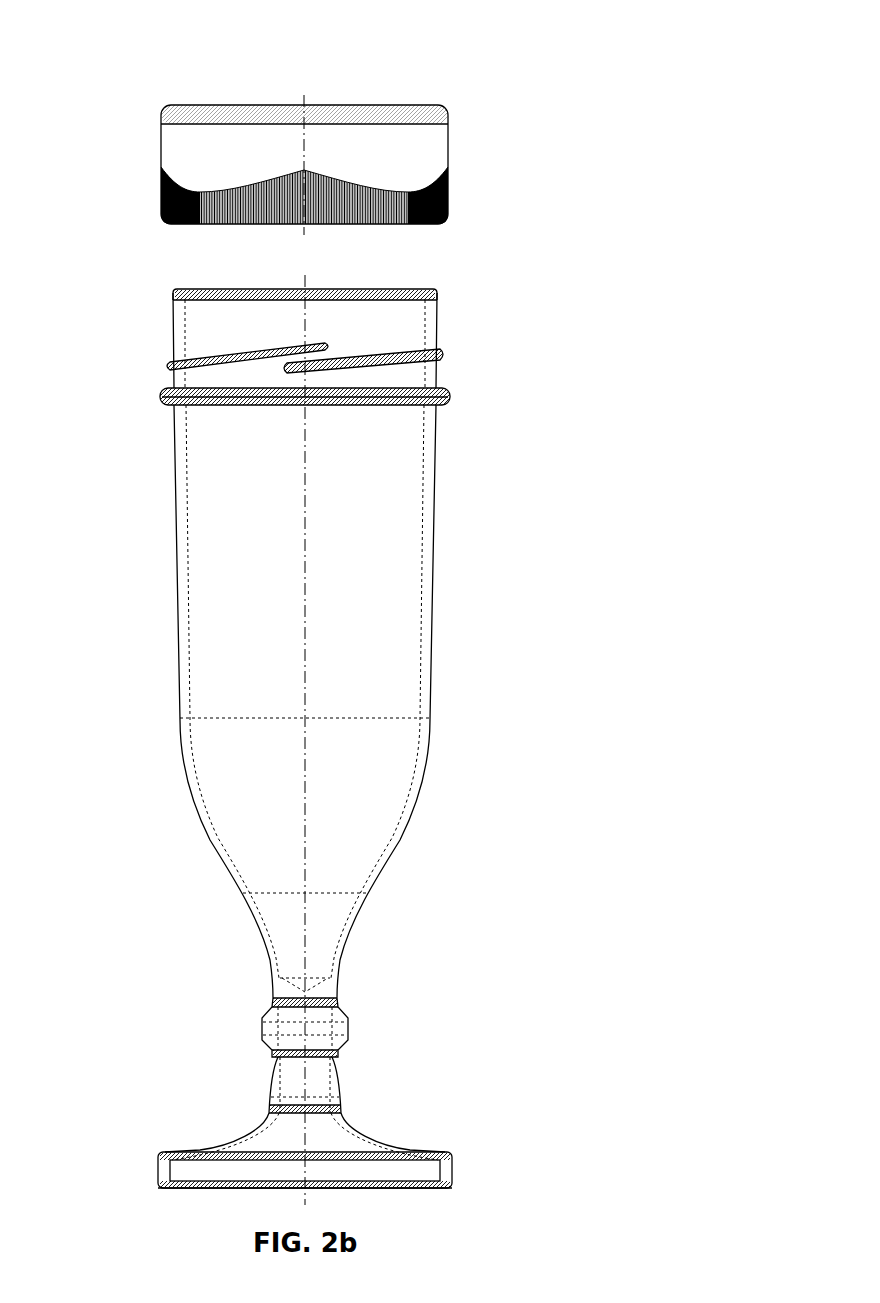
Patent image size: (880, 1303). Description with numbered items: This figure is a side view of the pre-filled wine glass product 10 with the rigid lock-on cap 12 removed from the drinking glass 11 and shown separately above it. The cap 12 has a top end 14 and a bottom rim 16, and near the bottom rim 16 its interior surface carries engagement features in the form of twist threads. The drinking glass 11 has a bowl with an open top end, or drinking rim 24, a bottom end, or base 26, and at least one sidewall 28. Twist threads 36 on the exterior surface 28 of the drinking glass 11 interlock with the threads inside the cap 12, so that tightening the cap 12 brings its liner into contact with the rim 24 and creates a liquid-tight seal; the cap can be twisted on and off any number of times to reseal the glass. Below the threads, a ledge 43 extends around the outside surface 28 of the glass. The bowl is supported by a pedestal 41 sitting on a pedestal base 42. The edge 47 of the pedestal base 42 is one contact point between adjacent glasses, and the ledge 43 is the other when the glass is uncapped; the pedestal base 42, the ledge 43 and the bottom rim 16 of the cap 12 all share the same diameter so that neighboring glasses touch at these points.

The pre-filled wine glass product 10 is at (198, 82).
The rigid lock-on lid, or cap 12 is at (448, 202).
The top end 14 is at (367, 107).
The bottom rim 16 is at (168, 223).
The drinking glass 11 is at (188, 502).
The open top end, or drinking rim 24 is at (423, 290).
The twist threads 36 is at (185, 360).
The ledge 43 is at (165, 393).
The sidewall 28 is at (435, 500).
The bottom end, or base 26 is at (297, 987).
The pedestal 41 is at (278, 1067).
The edge 47 is at (158, 1167).
The pedestal base 42 is at (423, 1188).